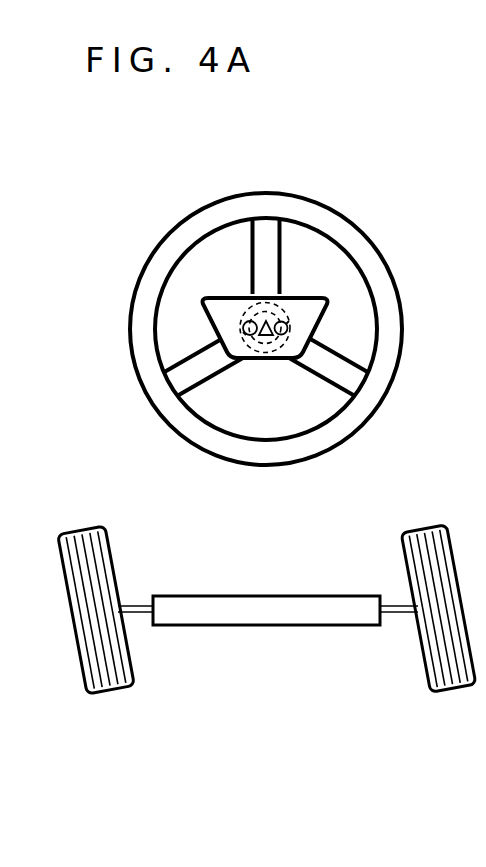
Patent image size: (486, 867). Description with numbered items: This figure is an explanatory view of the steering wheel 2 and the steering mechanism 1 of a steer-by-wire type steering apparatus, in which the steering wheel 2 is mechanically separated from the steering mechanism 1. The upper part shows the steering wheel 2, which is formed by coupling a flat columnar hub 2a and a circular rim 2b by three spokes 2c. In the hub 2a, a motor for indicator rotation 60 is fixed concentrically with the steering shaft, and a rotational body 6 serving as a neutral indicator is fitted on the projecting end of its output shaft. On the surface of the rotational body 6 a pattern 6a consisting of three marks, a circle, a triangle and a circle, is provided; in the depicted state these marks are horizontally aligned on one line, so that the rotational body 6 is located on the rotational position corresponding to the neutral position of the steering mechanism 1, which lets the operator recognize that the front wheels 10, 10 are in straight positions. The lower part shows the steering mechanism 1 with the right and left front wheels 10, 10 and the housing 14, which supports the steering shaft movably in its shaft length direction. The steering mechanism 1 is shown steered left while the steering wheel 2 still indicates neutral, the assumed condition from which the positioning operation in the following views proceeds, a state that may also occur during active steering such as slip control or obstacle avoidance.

The steering mechanism 1 is at (326, 693).
The steering wheel 2 is at (183, 218).
The hub 2a is at (247, 316).
The rim 2b is at (141, 292).
The spokes 2c is at (254, 237).
The rotational body 6 is at (320, 318).
The pattern 6a is at (292, 317).
The motor for indicator rotation 60 is at (266, 311).
The front wheels 10 is at (105, 695).
The housing 14 is at (218, 625).